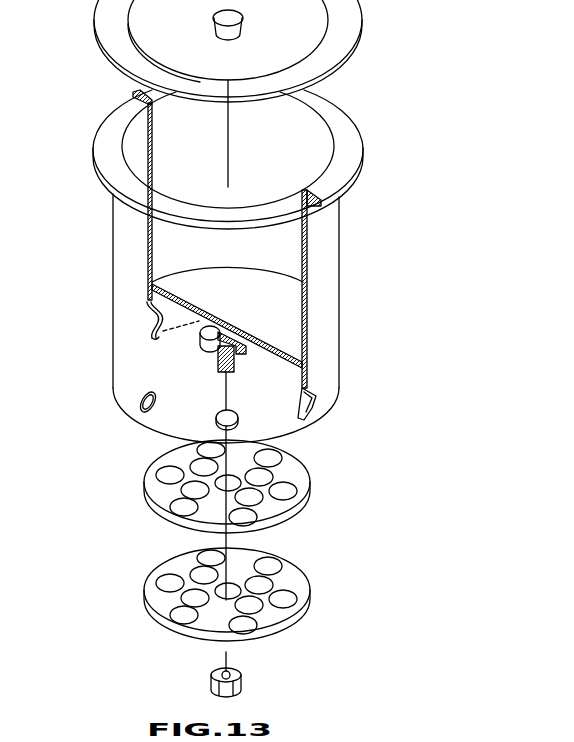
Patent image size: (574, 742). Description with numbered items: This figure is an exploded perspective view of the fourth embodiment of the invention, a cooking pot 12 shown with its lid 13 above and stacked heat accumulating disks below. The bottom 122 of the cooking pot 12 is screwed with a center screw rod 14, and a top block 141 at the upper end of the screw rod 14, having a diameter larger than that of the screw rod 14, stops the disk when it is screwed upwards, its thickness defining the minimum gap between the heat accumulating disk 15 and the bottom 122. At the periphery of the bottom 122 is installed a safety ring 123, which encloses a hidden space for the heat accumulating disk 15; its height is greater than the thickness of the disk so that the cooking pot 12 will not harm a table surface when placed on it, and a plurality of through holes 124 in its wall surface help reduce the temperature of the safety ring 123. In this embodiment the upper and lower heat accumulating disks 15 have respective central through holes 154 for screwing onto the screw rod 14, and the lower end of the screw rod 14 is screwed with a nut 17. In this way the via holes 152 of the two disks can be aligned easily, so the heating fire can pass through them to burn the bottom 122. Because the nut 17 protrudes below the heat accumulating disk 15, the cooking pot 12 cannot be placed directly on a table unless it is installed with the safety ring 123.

The cooking pot 12 is at (339, 247).
The lid 13 is at (352, 15).
The screw rod 14 is at (237, 362).
The heat accumulating disk 15 is at (302, 479).
The nut 17 is at (241, 681).
The bottom 122 is at (287, 342).
The safety ring 123 is at (157, 338).
The through hole 124 is at (130, 398).
The top block 141 is at (203, 339).
The via hole 152 is at (169, 473).
The central through hole 154 is at (193, 484).